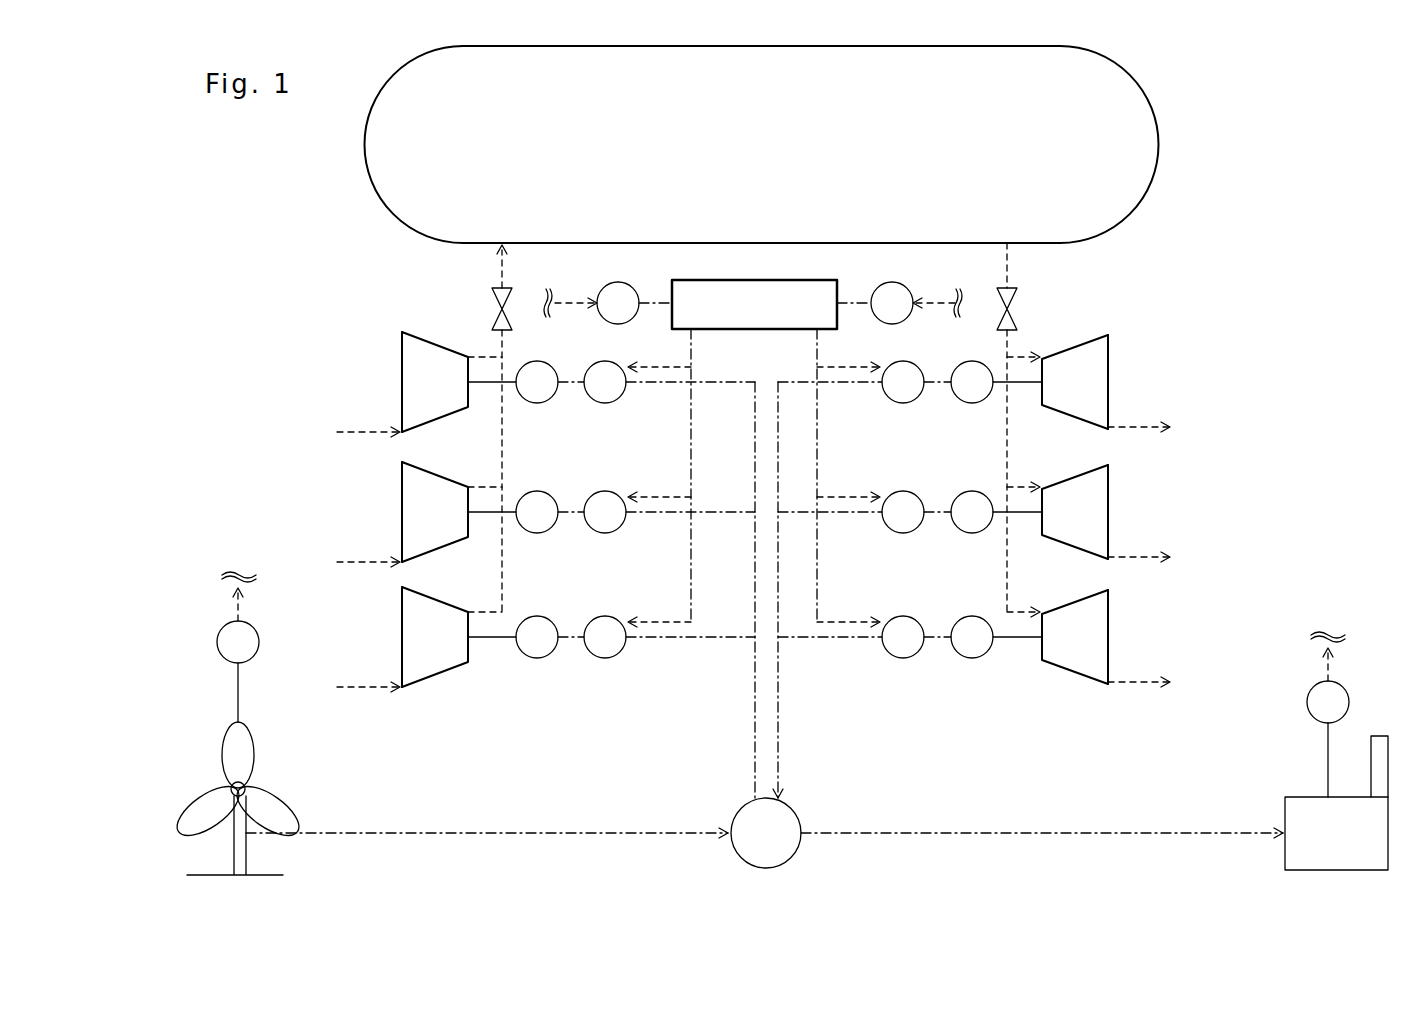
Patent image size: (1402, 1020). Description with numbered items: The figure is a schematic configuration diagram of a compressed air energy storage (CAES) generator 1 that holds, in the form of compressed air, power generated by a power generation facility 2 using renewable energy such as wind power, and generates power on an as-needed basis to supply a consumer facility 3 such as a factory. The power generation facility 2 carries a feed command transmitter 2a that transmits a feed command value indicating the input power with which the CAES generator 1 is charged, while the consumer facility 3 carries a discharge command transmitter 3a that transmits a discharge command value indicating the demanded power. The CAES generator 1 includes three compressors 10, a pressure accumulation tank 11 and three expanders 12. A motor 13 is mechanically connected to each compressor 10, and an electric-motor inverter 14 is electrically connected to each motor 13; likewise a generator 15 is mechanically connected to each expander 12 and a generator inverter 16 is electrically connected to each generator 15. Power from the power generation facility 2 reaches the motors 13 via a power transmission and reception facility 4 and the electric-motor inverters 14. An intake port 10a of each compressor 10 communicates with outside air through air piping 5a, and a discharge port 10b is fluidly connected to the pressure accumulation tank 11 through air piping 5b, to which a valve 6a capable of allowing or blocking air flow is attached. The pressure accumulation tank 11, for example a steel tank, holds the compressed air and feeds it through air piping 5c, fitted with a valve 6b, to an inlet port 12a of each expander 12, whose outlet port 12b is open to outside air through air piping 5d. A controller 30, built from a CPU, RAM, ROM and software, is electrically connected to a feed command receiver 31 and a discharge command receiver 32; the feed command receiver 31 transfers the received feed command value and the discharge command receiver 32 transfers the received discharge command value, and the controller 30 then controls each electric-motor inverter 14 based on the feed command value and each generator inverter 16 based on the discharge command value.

The compressed air energy storage generator 1 is at (266, 286).
The power generation facility 2 is at (222, 752).
The feed command transmitter 2a is at (217, 640).
The consumer facility 3 is at (1285, 797).
The discharge command transmitter 3a is at (1307, 700).
The power transmission and reception facility 4 is at (735, 815).
The air piping 5a is at (350, 432).
The air piping 5b is at (504, 466).
The air piping 5c is at (1007, 465).
The air piping 5d is at (1145, 425).
The valve 6a is at (492, 292).
The valve 6b is at (1015, 290).
The compressor 10 is at (402, 335).
The intake port 10a is at (402, 428).
The discharge port 10b is at (468, 357).
The pressure accumulation tank 11 is at (1150, 187).
The expander 12 is at (1108, 336).
The inlet port 12a is at (1042, 356).
The outlet port 12b is at (1108, 420).
The motor 13 is at (538, 404).
The electric-motor inverter 14 is at (607, 404).
The generator 15 is at (970, 404).
The generator inverter 16 is at (903, 404).
The controller 30 is at (735, 329).
The feed command receiver 31 is at (620, 324).
The discharge command receiver 32 is at (894, 324).